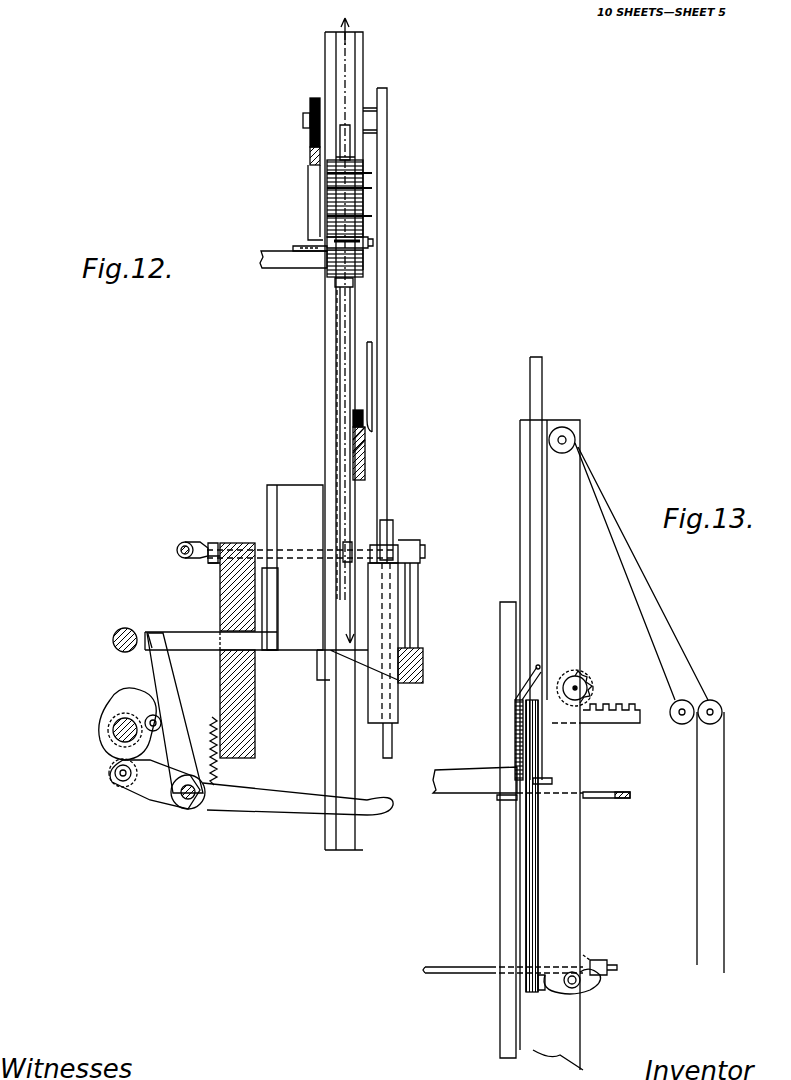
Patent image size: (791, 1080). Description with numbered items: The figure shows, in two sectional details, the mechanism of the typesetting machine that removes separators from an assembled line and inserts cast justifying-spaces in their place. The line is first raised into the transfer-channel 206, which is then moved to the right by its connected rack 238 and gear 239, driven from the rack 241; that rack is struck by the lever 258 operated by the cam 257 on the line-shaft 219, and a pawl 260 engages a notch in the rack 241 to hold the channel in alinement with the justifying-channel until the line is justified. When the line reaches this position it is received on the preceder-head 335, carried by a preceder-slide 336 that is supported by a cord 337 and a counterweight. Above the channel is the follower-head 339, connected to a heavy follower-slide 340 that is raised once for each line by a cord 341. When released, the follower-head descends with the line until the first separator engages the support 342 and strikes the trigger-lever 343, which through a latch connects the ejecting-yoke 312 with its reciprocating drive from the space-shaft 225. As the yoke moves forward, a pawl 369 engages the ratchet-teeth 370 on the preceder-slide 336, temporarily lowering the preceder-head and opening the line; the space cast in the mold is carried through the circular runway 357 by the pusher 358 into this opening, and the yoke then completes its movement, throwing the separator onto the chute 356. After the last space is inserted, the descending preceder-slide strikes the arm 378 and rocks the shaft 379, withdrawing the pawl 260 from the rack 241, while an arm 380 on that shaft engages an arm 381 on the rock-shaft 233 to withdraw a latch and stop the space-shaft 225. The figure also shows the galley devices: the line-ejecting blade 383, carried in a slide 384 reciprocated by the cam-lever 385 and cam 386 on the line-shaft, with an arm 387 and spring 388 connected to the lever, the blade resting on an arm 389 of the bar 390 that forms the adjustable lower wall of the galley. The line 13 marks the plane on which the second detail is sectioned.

In FIG. 12, the section line 13 is at (357, 27).
In FIG. 13, the transfer-channel 206 is at (517, 613).
In FIG. 12, the line-shaft 219 is at (113, 727).
In FIG. 12, the space-shaft 225 is at (124, 628).
In FIG. 12, the rock-shaft 233 is at (180, 546).
In FIG. 13, the rock-shaft 233 is at (503, 956).
In FIG. 12, the rack 238 is at (309, 157).
In FIG. 13, the rack 238 is at (614, 705).
In FIG. 12, the gear 239 is at (309, 103).
In FIG. 13, the gear 239 is at (584, 684).
In FIG. 12, the rack 241 is at (392, 740).
In FIG. 12, the cam 257 is at (97, 762).
In FIG. 12, the lever 258 is at (298, 799).
In FIG. 12, the pawl 260 is at (393, 532).
In FIG. 13, the pawl 260 is at (586, 955).
In FIG. 13, the ejecting-yoke 312 is at (592, 797).
In FIG. 12, the preceder-head 335 is at (338, 288).
In FIG. 13, the preceder-head 335 is at (517, 772).
In FIG. 12, the preceder-slide 336 is at (345, 407).
In FIG. 13, the preceder-slide 336 is at (531, 892).
In FIG. 13, the cord 337 is at (696, 862).
In FIG. 12, the follower-head 339 is at (353, 158).
In FIG. 13, the follower-head 339 is at (520, 686).
In FIG. 12, the follower-slide 340 is at (357, 88).
In FIG. 13, the follower-slide 340 is at (541, 400).
In FIG. 13, the cord 341 is at (684, 638).
In FIG. 12, the support 342 is at (318, 237).
In FIG. 12, the trigger-lever 343 is at (374, 242).
In FIG. 13, the chute 356 is at (492, 800).
In FIG. 12, the circular runway 357 is at (287, 262).
In FIG. 12, the pusher 358 is at (305, 247).
In FIG. 12, the pawl 369 is at (373, 373).
In FIG. 12, the ratchet-teeth 370 is at (366, 449).
In FIG. 12, the arm 378 is at (352, 542).
In FIG. 13, the arm 378 is at (540, 983).
In FIG. 12, the rock-shaft 379 is at (263, 548).
In FIG. 13, the rock-shaft 379 is at (570, 989).
In FIG. 12, the arm 380 is at (213, 566).
In FIG. 13, the arm 380 is at (601, 990).
In FIG. 12, the arm 381 is at (203, 556).
In FIG. 13, the arm 381 is at (608, 972).
In FIG. 12, the line-ejecting blade 383 is at (292, 492).
In FIG. 12, the slide 384 is at (257, 655).
In FIG. 12, the cam-lever 385 is at (172, 697).
In FIG. 12, the cam 386 is at (133, 693).
In FIG. 12, the arm 387 is at (211, 802).
In FIG. 12, the spring 388 is at (218, 770).
In FIG. 12, the arm 389 is at (320, 678).
In FIG. 12, the bar 390 is at (424, 665).